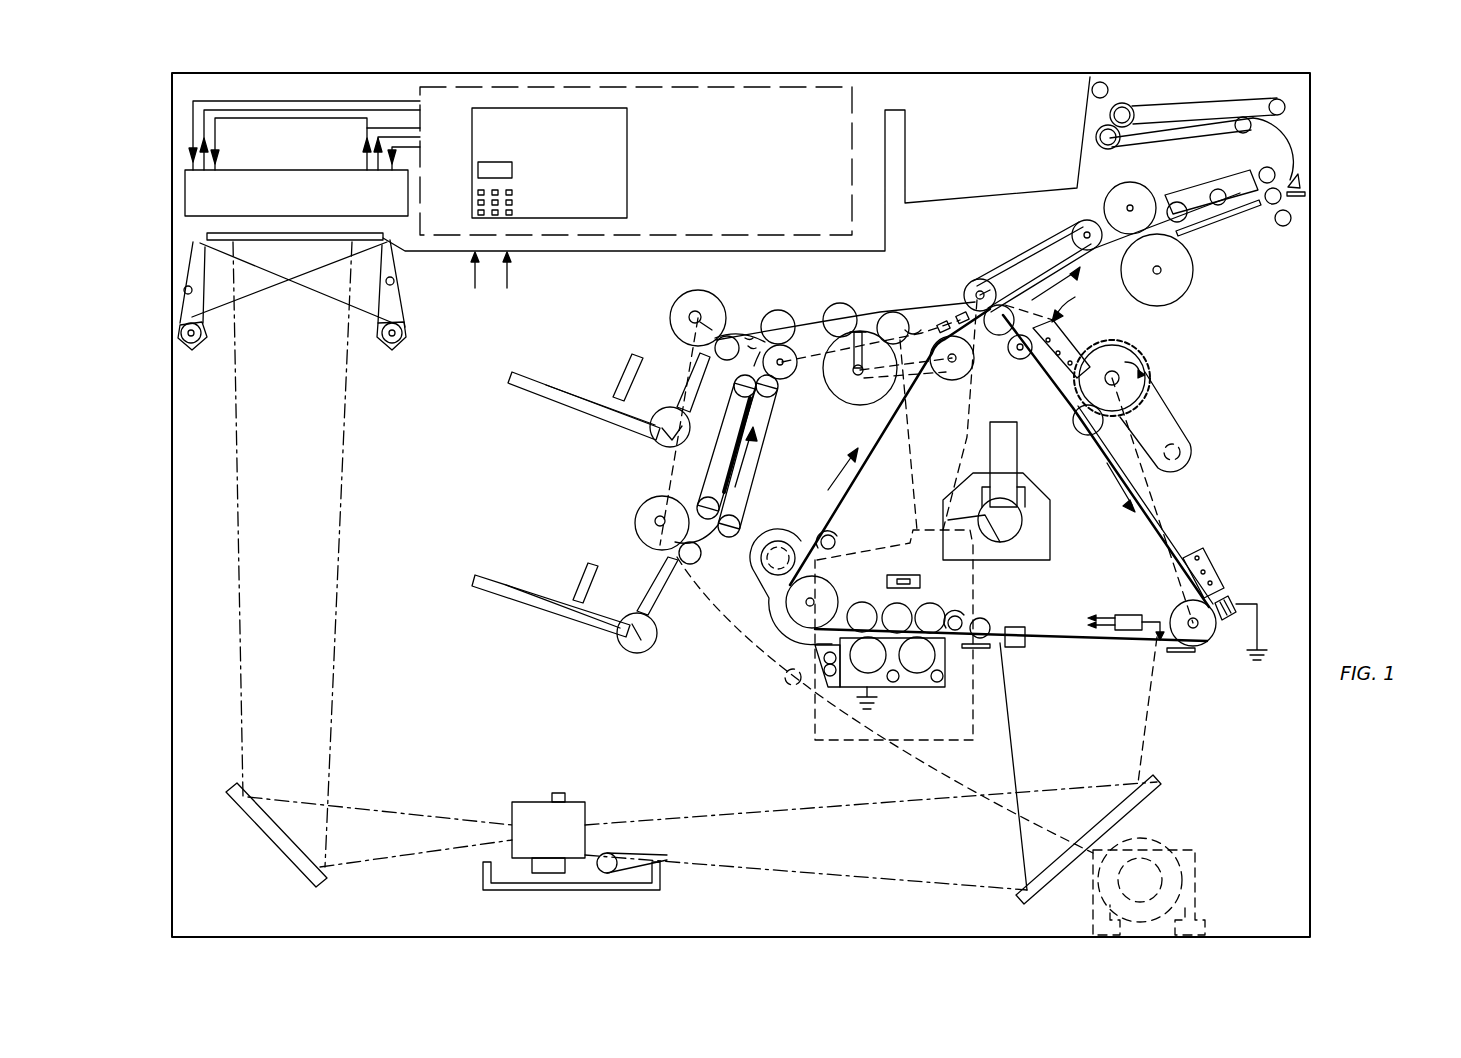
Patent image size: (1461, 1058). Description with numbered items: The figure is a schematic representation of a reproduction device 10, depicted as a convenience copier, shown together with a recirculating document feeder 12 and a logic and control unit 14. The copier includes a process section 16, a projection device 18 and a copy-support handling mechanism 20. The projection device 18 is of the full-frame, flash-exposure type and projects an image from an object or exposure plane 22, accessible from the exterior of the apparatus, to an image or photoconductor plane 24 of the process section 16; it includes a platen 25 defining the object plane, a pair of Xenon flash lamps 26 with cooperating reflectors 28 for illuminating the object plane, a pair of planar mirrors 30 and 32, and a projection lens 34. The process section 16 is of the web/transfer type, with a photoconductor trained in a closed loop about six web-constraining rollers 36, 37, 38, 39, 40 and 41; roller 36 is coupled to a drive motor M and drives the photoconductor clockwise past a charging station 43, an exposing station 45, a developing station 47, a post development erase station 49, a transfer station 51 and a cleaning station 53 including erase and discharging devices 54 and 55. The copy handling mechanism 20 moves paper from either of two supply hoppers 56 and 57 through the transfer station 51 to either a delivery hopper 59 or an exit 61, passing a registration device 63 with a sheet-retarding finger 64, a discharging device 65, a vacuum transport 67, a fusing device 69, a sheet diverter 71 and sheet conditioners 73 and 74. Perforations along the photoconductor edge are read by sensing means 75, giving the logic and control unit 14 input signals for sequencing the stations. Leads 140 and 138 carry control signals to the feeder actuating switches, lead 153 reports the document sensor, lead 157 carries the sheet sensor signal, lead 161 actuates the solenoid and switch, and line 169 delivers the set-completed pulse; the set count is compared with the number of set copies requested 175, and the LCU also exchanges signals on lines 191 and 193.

The reproduction device 10 is at (1312, 390).
The feeder 12 is at (186, 203).
The logic and control unit 14 is at (855, 90).
The process section 16 is at (705, 690).
The projection device 18 is at (706, 884).
The copy-support handling mechanism 20 is at (646, 472).
The object or exposure plane 22 is at (210, 236).
The image or photoconductor plane 24 is at (1070, 652).
The platen 25 is at (186, 291).
The Xenon flash lamps 26 is at (196, 350).
The reflectors 28 is at (187, 305).
The planar mirror 30 is at (262, 828).
The planar mirror 32 is at (1010, 898).
The projection lens 34 is at (545, 870).
The web-constraining roller 36 is at (1203, 645).
The web-constraining roller 37 is at (982, 620).
The web-constraining roller 38 is at (822, 590).
The web-constraining roller 39 is at (948, 372).
The web-constraining roller 40 is at (998, 340).
The web-constraining roller 41 is at (1078, 422).
The charging station 43 is at (1220, 570).
The exposing station 45 is at (1060, 622).
The developing station 47 is at (928, 686).
The post development erase station 49 is at (836, 540).
The transfer station 51 is at (938, 322).
The cleaning station 53 is at (1079, 302).
The erase device 54 is at (1024, 360).
The discharging device 55 is at (1065, 345).
The supply hopper 56 is at (576, 408).
The supply hopper 57 is at (550, 618).
The delivery hopper 59 is at (905, 160).
The exit 61 is at (1306, 194).
The registration device 63 is at (848, 392).
The sheet-retarding finger 64 is at (858, 330).
The discharging device 65 is at (972, 298).
The vacuum transport 67 is at (1060, 270).
The fusing device 69 is at (1183, 283).
The sheet diverter 71 is at (1300, 178).
The sheet conditioner 73 is at (1108, 85).
The sheet conditioner 74 is at (1283, 226).
The perforation sensing means 75 is at (1128, 620).
The LCU lead 138 is at (204, 126).
The LCU lead 140 is at (405, 150).
The lead 153 is at (400, 138).
The lead 157 is at (378, 128).
The lead 161 is at (245, 122).
The line 169 is at (193, 108).
The number of set copies requested 175 is at (512, 202).
The control signal 191 is at (475, 275).
The control signal 193 is at (507, 262).
The drive motor M is at (1195, 858).